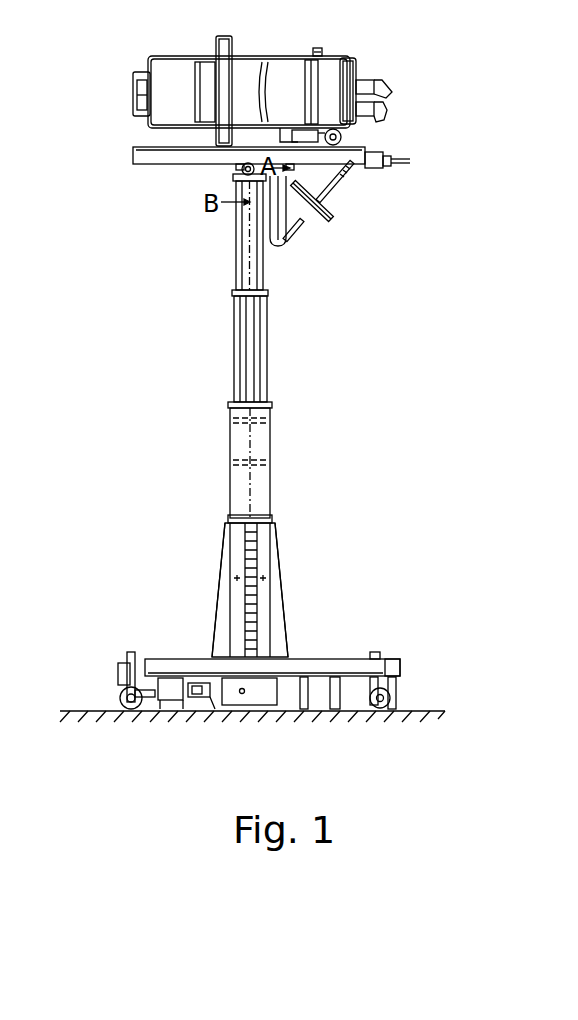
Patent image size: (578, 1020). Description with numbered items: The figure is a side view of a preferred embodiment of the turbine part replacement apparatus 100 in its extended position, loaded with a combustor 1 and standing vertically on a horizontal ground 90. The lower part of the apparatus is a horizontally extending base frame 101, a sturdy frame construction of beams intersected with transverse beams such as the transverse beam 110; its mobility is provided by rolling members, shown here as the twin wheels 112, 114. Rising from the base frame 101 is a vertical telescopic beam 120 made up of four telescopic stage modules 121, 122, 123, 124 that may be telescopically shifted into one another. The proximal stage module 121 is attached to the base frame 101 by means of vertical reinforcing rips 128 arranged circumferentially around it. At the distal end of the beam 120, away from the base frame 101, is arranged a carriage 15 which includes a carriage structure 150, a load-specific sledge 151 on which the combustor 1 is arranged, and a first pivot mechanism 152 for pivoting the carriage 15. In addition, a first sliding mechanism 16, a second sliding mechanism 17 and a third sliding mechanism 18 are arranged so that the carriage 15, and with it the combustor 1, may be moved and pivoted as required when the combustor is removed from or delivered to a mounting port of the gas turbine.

The combustor 1 is at (358, 50).
The carriage 15 is at (392, 212).
The first sliding mechanism 16 is at (284, 245).
The second sliding mechanism 17 is at (236, 165).
The third sliding mechanism 18 is at (396, 153).
The horizontal ground 90 is at (440, 711).
The turbine part replacement apparatus 100 is at (194, 232).
The base frame 101 is at (408, 663).
The transverse beam 110 is at (294, 682).
The rolling member 112 is at (110, 715).
The rolling member 114 is at (390, 715).
The vertical telescopic beam 120 is at (118, 282).
The proximal stage module 121 is at (228, 530).
The telescopic stage module 122 is at (232, 428).
The telescopic stage module 123 is at (234, 340).
The telescopic stage module 124 is at (236, 270).
The vertical reinforcing rips 128 is at (224, 603).
The carriage structure 150 is at (340, 176).
The load-specific sledge 151 is at (356, 166).
The first pivot mechanism 152 is at (336, 212).